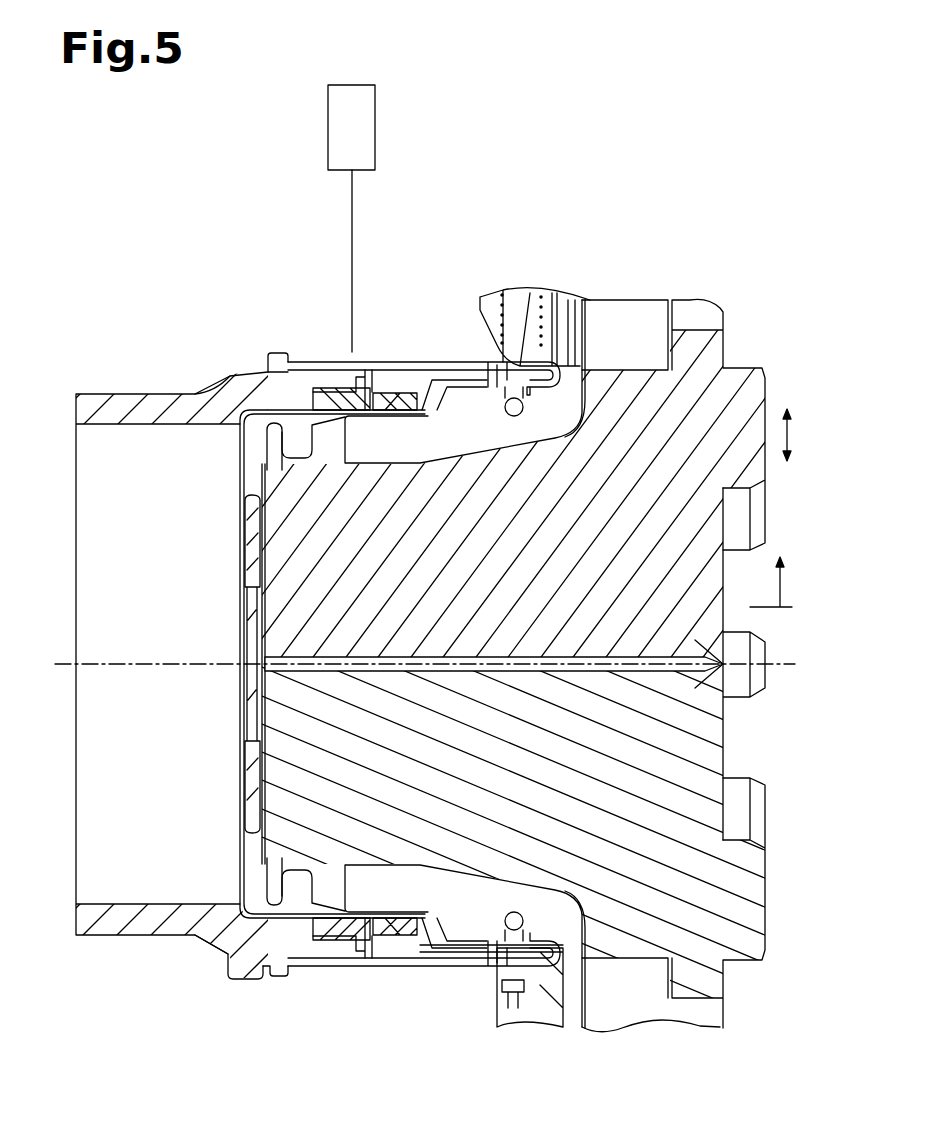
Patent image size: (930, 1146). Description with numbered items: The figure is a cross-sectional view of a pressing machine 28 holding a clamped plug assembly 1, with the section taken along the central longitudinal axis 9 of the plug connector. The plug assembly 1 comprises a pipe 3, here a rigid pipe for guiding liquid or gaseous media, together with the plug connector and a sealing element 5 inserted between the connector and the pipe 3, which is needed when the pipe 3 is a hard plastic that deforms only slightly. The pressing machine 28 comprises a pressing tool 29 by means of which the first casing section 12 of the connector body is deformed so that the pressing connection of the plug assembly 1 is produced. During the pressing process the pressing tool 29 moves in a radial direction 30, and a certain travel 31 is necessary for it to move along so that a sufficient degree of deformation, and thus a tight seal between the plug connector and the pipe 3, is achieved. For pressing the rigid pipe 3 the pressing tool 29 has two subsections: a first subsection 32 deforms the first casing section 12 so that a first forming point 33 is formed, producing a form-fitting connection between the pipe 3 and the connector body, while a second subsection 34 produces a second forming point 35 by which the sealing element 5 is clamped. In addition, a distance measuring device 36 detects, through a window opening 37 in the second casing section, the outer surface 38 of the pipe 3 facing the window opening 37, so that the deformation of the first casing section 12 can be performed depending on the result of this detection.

The plug assembly 1 is at (146, 230).
The pipe 3 is at (130, 395).
The sealing element 5 is at (347, 395).
The central longitudinal axis 9 is at (116, 662).
The first casing section 12 is at (257, 384).
The pressing machine 28 is at (607, 197).
The pressing tool 29 is at (727, 397).
The radial direction 30 is at (790, 435).
The travel 31 is at (782, 588).
The first subsection 32 is at (263, 417).
The first forming point 33 is at (272, 437).
The second subsection 34 is at (312, 400).
The second forming point 35 is at (309, 428).
The distance measuring device 36 is at (376, 145).
The window opening 37 is at (362, 354).
The outer surface 38 is at (258, 362).